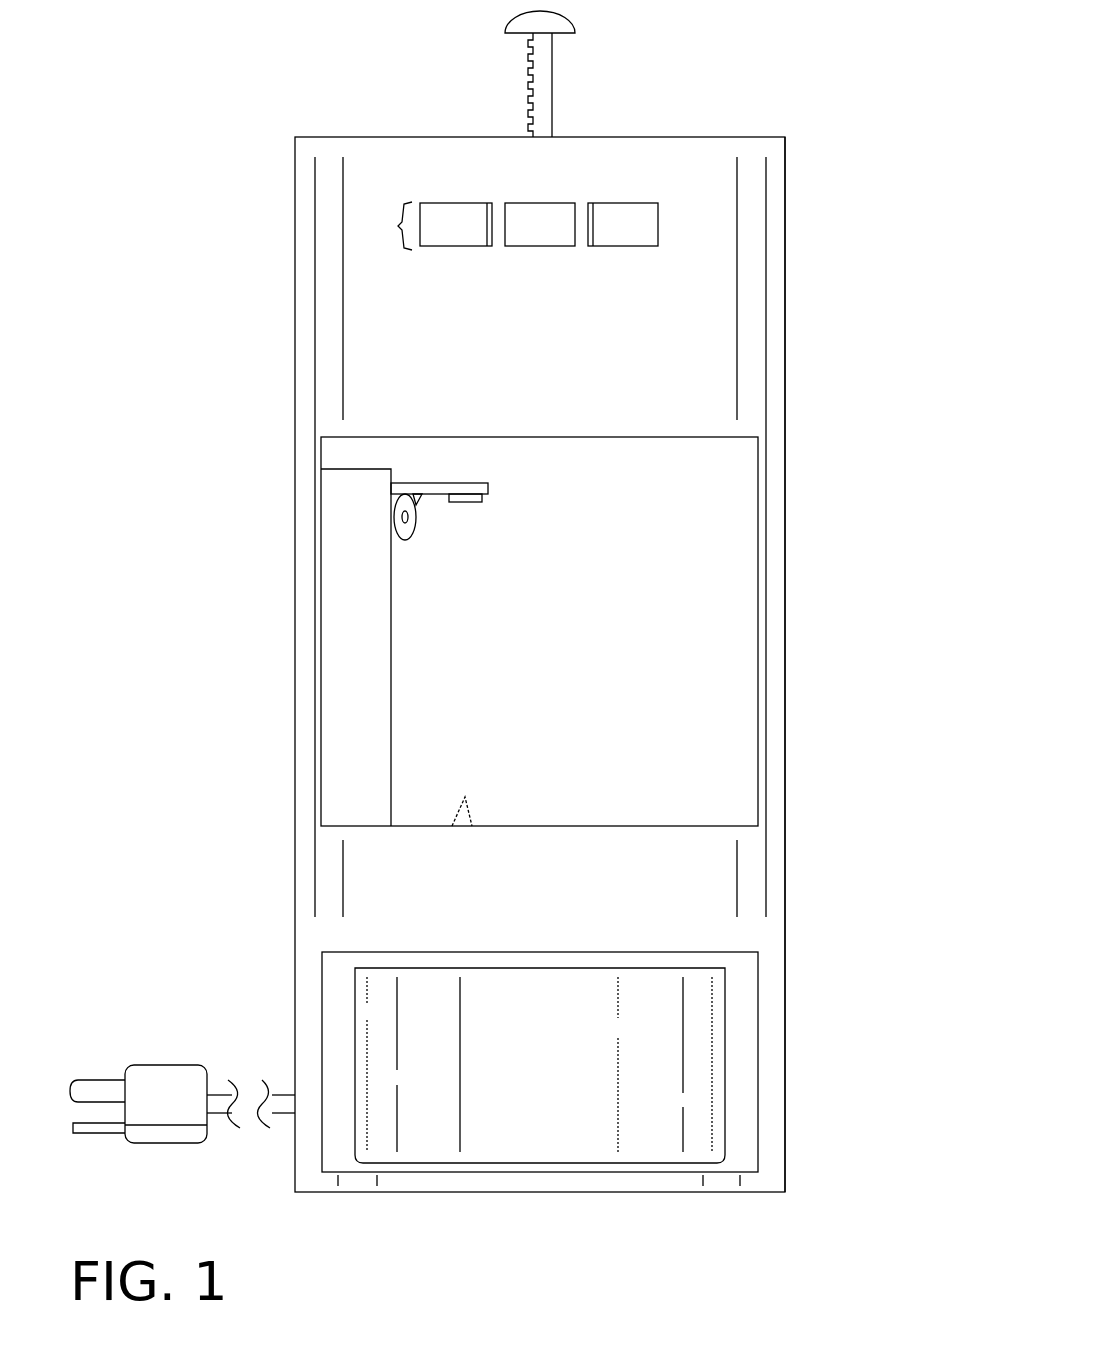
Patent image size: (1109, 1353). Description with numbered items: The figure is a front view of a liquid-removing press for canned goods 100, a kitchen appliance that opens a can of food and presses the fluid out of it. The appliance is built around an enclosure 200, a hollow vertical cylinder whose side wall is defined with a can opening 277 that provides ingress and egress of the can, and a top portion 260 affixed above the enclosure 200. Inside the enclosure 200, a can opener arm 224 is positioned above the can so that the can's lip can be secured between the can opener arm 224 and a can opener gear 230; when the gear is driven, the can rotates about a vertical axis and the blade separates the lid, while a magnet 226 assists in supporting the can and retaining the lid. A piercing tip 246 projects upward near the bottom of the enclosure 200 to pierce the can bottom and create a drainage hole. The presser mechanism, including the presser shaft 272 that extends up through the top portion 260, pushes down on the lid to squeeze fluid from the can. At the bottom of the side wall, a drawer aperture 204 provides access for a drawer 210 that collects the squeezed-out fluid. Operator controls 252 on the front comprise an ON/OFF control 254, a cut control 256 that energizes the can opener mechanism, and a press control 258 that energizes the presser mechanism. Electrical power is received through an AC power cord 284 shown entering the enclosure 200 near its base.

The liquid-removing press for canned goods 100 is at (150, 82).
The enclosure 200 is at (785, 560).
The drawer aperture 204 is at (758, 1023).
The drawer 210 is at (690, 1087).
The can opener arm 224 is at (467, 483).
The magnet 226 is at (459, 502).
The can opener gear 230 is at (407, 540).
The piercing tip 246 is at (470, 810).
The operator controls 252 is at (398, 227).
The ON/OFF control 254 is at (450, 246).
The cut control 256 is at (537, 246).
The press control 258 is at (627, 246).
The top portion 260 is at (777, 247).
The presser shaft 272 is at (552, 67).
The can opening 277 is at (750, 508).
The AC power cord 284 is at (218, 1095).